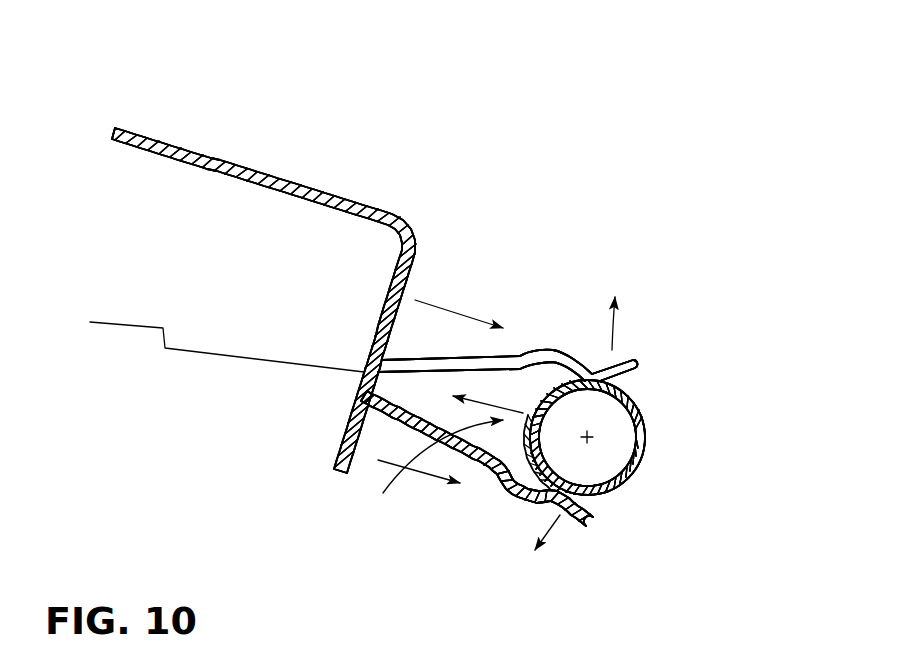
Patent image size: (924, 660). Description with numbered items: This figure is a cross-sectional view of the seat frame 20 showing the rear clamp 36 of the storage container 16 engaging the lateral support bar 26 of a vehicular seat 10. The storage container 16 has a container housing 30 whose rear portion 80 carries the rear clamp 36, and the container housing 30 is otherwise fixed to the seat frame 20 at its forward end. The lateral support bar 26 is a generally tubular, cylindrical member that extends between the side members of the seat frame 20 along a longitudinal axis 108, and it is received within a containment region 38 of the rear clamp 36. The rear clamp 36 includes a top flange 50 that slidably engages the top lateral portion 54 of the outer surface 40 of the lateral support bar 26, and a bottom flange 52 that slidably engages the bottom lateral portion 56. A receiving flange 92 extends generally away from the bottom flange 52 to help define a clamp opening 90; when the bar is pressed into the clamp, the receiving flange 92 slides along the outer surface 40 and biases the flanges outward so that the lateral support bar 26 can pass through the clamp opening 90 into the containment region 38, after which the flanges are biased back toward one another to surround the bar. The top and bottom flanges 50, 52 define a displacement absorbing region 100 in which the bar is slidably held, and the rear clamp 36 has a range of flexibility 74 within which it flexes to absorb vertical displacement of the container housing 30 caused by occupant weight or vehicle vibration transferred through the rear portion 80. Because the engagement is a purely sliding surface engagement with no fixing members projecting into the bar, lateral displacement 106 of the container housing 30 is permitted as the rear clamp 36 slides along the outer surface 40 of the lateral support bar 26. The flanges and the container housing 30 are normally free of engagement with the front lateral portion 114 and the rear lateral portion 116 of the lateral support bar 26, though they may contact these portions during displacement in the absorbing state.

The vehicular seat 10 is at (413, 85).
The storage container 16 is at (240, 142).
The container housing 30 is at (330, 185).
The rear portion 80 is at (428, 258).
The lateral displacement 106 is at (440, 307).
The containment region 38 is at (532, 382).
The top flange 50 is at (550, 350).
The top lateral portion 54 is at (557, 387).
The rear clamp 36 is at (643, 273).
The range of flexibility 74 is at (700, 345).
The outer surface 40 is at (643, 403).
The seat frame 20 is at (683, 420).
The longitudinal axis 108 is at (587, 437).
The rear lateral portion 116 is at (647, 450).
The lateral support bar 26 is at (675, 485).
The clamp opening 90 is at (608, 503).
The receiving flange 92 is at (598, 528).
The bottom lateral portion 56 is at (530, 501).
The bottom flange 52 is at (520, 487).
The front lateral portion 114 is at (495, 462).
The displacement absorbing region 100 is at (407, 495).